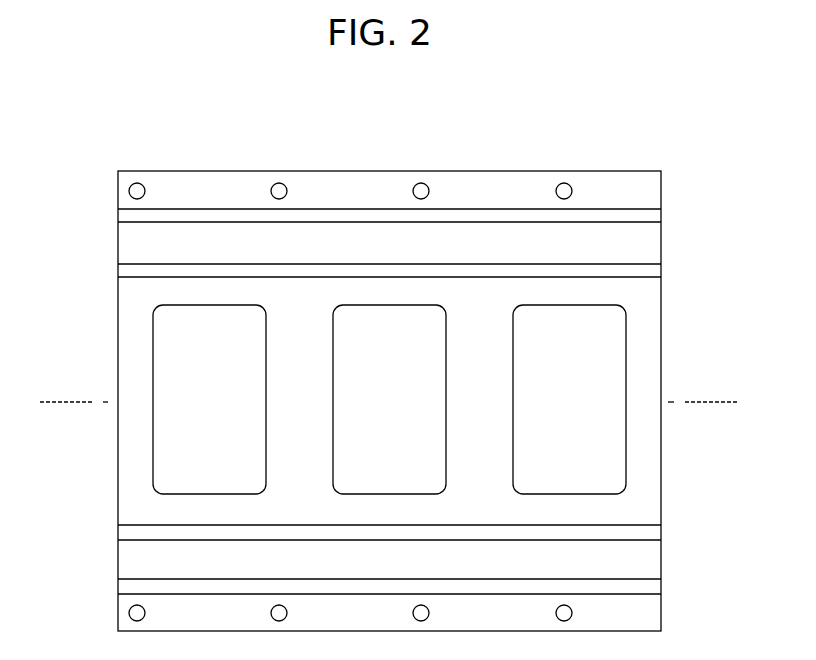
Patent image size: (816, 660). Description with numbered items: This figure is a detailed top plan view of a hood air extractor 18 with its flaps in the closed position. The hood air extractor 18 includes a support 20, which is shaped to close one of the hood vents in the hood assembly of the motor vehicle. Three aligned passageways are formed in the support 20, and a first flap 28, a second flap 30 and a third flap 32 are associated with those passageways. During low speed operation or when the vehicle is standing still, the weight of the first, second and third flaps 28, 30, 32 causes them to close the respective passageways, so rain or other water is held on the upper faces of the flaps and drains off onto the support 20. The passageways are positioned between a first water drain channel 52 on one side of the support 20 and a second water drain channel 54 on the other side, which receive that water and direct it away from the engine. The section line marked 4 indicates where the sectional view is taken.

The hood air extractor 18 is at (596, 142).
The support 20 is at (643, 498).
The first flap 28 is at (207, 338).
The second flap 30 is at (388, 338).
The third flap 32 is at (587, 360).
The first water drain channel 52 is at (143, 245).
The second water drain channel 54 is at (144, 559).
The section line 4- 4 is at (49, 406).